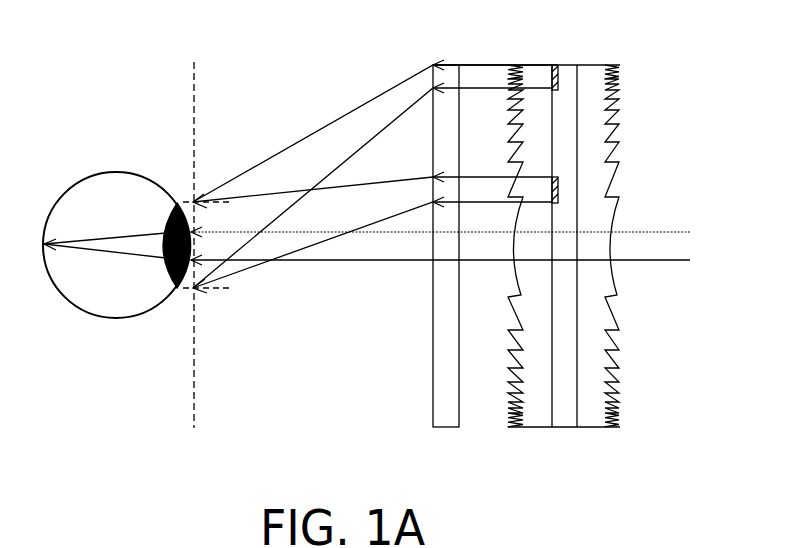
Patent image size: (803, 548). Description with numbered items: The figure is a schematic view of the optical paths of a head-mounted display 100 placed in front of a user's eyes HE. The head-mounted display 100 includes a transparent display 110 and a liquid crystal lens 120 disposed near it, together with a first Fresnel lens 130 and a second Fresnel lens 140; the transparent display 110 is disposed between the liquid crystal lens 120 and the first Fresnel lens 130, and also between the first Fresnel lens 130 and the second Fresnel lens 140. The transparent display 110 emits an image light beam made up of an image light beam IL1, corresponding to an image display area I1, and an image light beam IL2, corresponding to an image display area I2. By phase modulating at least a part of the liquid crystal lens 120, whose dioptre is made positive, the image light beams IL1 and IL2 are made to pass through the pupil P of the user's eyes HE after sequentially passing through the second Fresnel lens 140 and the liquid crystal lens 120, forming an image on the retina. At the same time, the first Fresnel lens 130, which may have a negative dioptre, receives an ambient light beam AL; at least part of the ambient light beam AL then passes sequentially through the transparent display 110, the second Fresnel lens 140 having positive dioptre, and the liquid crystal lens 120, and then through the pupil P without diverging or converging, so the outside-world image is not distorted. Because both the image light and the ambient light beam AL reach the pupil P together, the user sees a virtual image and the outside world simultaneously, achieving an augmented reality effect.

The head-mounted display 100 is at (632, 452).
The transparent display 110 is at (563, 70).
The liquid crystal lens 120 is at (447, 397).
The first Fresnel lens 130 is at (598, 70).
The second Fresnel lens 140 is at (533, 397).
The image display area I1 is at (558, 80).
The image display area I2 is at (558, 189).
The image light beam IL1 is at (325, 177).
The image light beam IL2 is at (382, 220).
The ambient light beam AL is at (655, 233).
The user's eyes HE is at (102, 303).
The pupil P is at (193, 383).